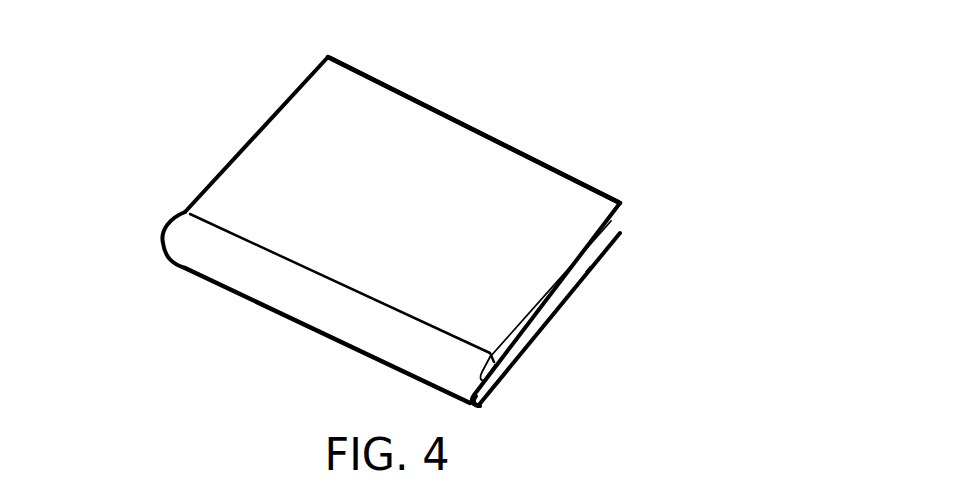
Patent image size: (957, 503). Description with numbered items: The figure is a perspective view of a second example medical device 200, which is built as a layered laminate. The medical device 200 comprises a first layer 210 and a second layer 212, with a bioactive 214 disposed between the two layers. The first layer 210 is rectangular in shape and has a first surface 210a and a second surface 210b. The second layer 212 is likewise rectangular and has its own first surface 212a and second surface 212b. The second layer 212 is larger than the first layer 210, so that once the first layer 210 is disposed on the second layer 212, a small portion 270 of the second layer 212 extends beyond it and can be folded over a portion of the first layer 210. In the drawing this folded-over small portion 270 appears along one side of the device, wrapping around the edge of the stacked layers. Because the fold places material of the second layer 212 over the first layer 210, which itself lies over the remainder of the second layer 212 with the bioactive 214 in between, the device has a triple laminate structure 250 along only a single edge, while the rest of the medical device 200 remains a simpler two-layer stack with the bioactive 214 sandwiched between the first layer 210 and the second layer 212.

The medical device 200 is at (162, 185).
The first layer 210 is at (525, 147).
The first surface of the first layer 210a is at (550, 197).
The second surface of the first layer 210b is at (622, 231).
The second layer 212 is at (610, 248).
The first surface of the second layer 212a is at (603, 255).
The second surface of the second layer 212b is at (240, 278).
The bioactive 214 is at (590, 267).
The triple laminate structure 250 is at (510, 398).
The small portion of the second layer 270 is at (158, 223).